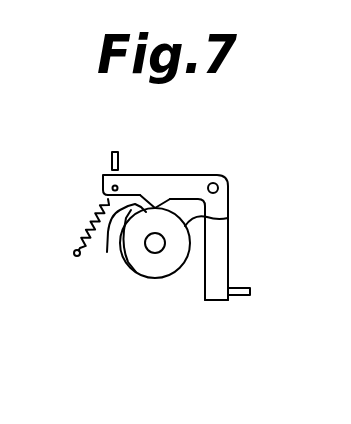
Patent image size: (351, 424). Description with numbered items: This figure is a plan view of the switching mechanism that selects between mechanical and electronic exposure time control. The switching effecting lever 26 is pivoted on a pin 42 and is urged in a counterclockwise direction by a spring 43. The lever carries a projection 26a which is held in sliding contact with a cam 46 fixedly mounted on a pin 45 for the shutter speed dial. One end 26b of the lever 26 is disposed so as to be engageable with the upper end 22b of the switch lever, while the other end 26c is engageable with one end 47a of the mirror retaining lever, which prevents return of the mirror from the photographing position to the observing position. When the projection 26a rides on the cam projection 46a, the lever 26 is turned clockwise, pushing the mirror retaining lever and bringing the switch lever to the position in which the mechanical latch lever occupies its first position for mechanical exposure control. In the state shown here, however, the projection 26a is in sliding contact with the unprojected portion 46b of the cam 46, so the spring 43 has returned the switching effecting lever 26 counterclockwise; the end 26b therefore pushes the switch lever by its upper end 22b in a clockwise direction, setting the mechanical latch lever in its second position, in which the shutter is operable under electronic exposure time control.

The switching effecting lever 26 is at (217, 248).
The projection 26a is at (155, 206).
The one end of lever 26b is at (215, 300).
The other end of lever 26c is at (112, 188).
The pin 42 is at (213, 183).
The one end of mirror retaining lever 47a is at (110, 163).
The spring 43 is at (83, 225).
The cam 46 is at (160, 266).
The pin 45 is at (149, 252).
The cam projection 46a is at (114, 242).
The unprojected portion of cam 46b is at (228, 218).
The upper end of switch lever 22b is at (240, 296).